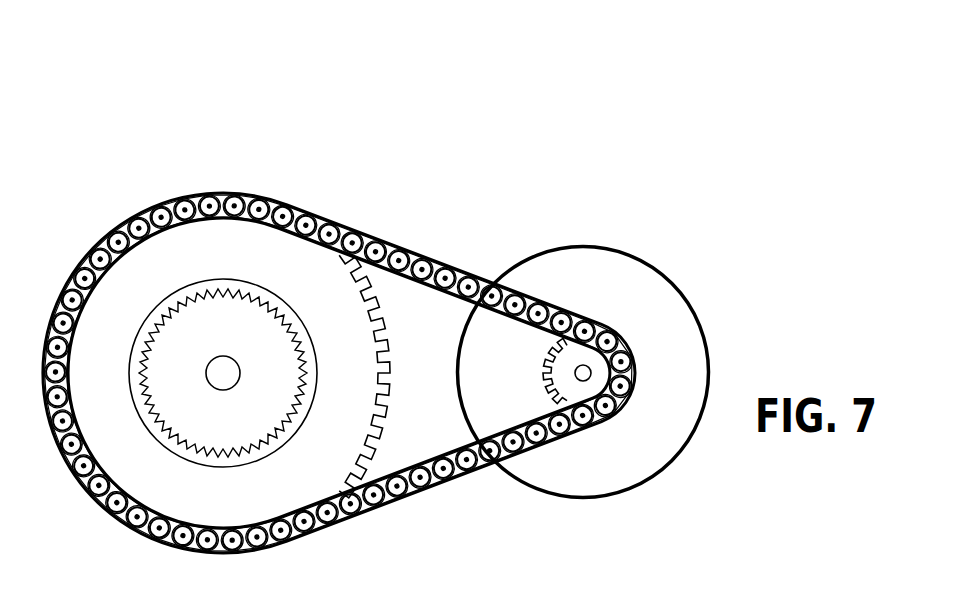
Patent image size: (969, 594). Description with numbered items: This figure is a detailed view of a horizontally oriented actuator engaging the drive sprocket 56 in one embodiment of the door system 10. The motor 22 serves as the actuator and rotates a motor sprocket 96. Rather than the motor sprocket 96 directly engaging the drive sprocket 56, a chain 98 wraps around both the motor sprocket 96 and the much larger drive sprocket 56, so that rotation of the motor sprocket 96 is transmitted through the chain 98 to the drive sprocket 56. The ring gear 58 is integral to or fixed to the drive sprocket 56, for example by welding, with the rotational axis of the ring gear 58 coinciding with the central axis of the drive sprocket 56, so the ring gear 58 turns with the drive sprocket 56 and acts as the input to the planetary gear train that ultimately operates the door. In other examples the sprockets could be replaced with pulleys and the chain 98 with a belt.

The door system 10 is at (546, 89).
The motor 22 is at (638, 233).
The drive sprocket 56 is at (248, 242).
The ring gear 58 is at (265, 298).
The motor sprocket 96 is at (588, 364).
The chain 98 is at (445, 265).